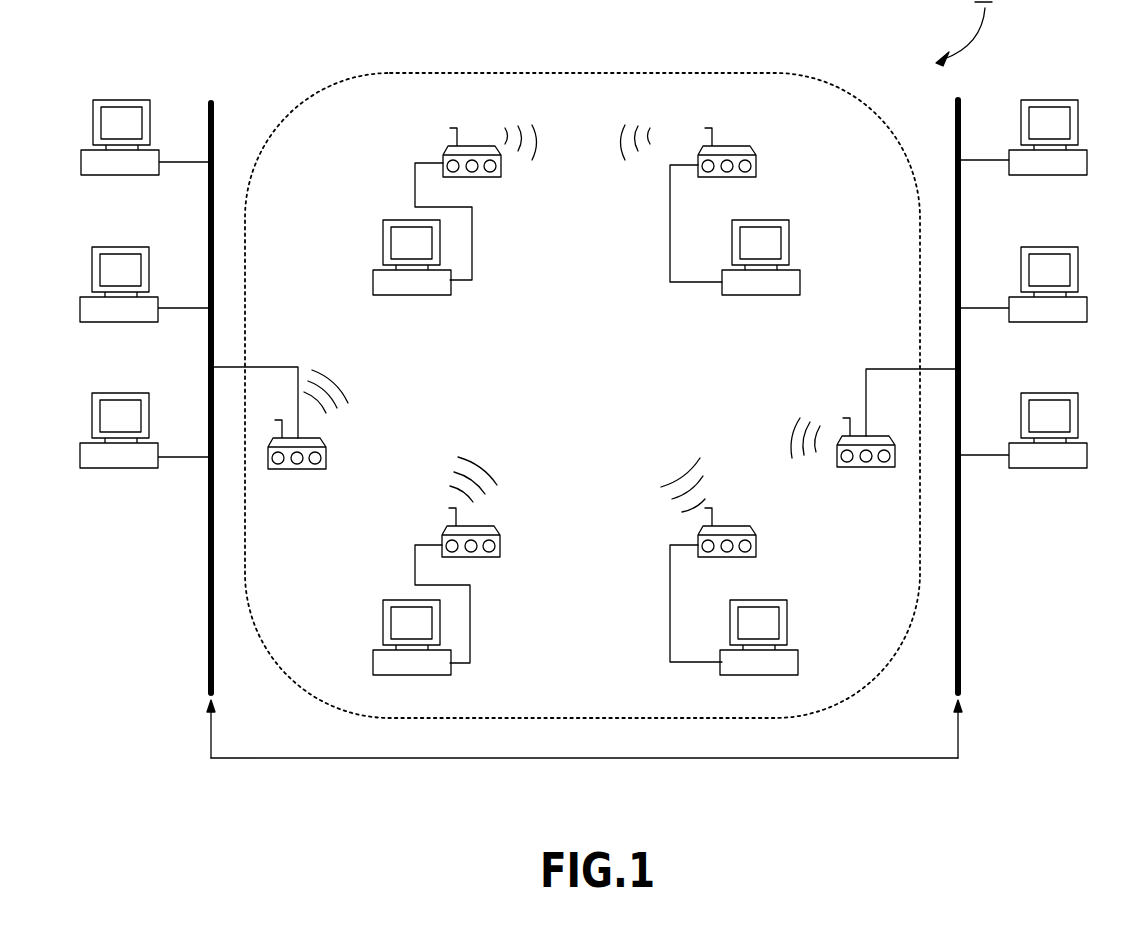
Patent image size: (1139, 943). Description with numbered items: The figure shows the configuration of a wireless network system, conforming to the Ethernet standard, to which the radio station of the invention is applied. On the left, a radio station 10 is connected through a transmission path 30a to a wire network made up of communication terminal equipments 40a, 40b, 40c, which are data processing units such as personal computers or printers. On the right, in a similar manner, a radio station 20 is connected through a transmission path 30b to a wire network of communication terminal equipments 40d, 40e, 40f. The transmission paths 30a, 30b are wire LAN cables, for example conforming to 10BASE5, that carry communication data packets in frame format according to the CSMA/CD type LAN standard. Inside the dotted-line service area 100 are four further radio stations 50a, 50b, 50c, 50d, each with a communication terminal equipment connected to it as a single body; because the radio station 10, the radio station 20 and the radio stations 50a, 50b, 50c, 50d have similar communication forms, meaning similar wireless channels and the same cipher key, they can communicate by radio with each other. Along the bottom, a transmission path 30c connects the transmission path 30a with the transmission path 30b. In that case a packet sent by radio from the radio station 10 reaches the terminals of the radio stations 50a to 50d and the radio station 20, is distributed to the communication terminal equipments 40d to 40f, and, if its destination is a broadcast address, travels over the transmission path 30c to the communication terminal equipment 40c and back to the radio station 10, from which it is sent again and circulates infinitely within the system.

The service area 100 is at (588, 73).
The radio station 10 is at (327, 456).
The radio station 20 is at (885, 470).
The transmission path 30a is at (214, 116).
The transmission path 30b is at (955, 116).
The transmission path 30c is at (557, 758).
The communication terminal equipment 40a is at (121, 100).
The communication terminal equipment 40b is at (120, 247).
The communication terminal equipment 40c is at (120, 393).
The communication terminal equipment 40d is at (1050, 100).
The communication terminal equipment 40e is at (1050, 247).
The communication terminal equipment 40f is at (1050, 393).
The radio station 50a is at (443, 157).
The radio station 50b is at (757, 163).
The radio station 50c is at (500, 543).
The radio station 50d is at (756, 543).